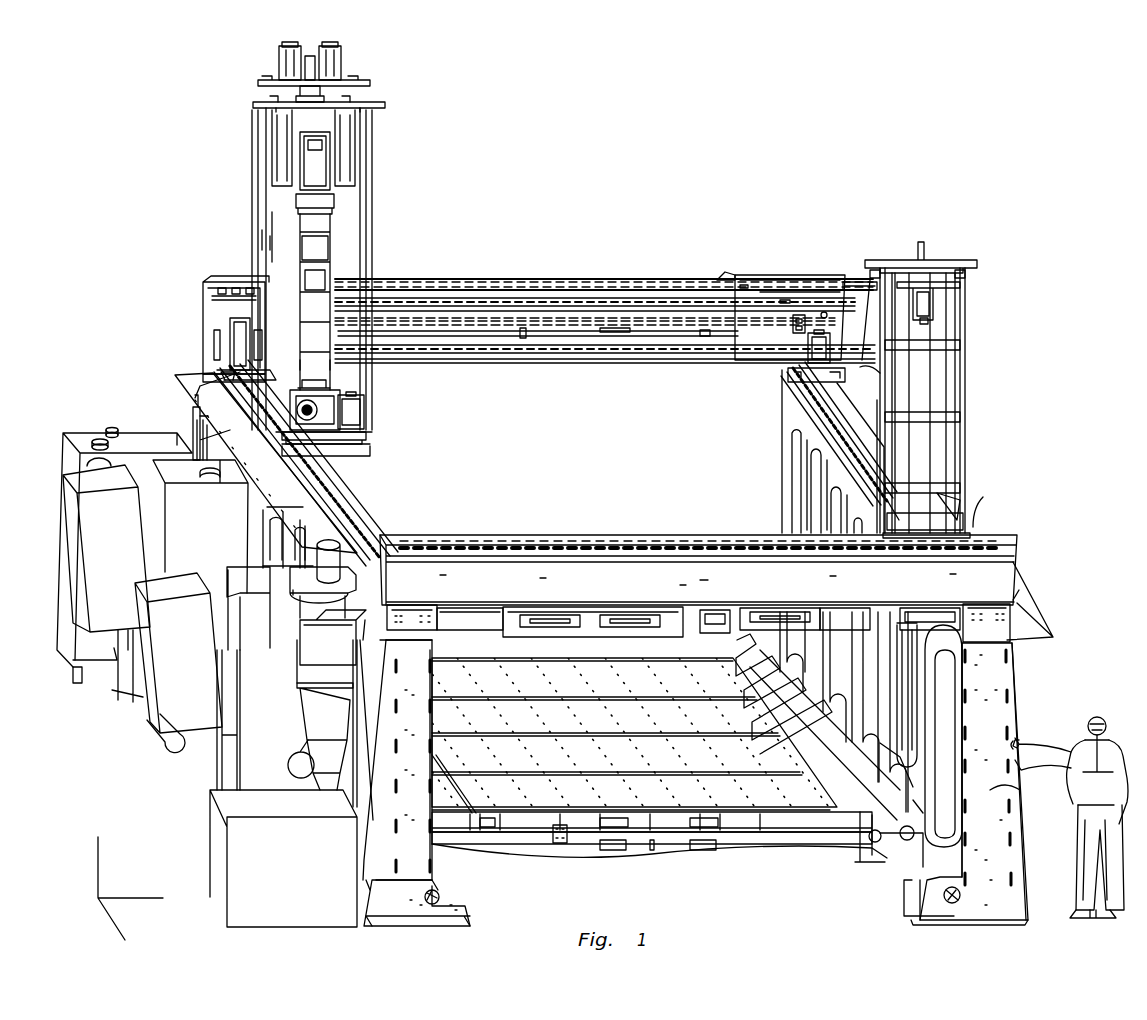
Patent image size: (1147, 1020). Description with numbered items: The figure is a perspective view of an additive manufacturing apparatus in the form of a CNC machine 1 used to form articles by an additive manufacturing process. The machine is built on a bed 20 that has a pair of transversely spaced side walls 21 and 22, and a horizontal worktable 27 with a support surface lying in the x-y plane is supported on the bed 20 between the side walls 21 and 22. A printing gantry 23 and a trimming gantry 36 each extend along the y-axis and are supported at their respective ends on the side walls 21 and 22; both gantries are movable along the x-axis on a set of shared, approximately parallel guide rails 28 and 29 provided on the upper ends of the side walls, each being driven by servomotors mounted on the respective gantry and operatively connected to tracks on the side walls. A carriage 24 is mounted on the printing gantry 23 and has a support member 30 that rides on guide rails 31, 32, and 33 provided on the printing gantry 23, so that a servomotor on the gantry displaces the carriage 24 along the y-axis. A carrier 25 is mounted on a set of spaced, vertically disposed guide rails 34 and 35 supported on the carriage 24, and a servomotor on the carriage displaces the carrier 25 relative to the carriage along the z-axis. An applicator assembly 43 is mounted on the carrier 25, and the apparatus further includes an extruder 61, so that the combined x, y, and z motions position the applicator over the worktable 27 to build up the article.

The CNC machine 1 is at (962, 162).
The bed 20 is at (572, 850).
The side wall 21 is at (413, 738).
The side wall 22 is at (990, 793).
The printing gantry 23 is at (766, 292).
The carriage 24 is at (256, 240).
The carrier 25 is at (362, 170).
The horizontal worktable 27 is at (597, 750).
The guide rail 28 is at (370, 500).
The guide rail 29 is at (799, 410).
The support member 30 is at (255, 262).
The guide rail 31 is at (630, 280).
The guide rail 32 is at (558, 300).
The guide rail 33 is at (592, 348).
The guide rail 34 is at (272, 219).
The guide rail 35 is at (335, 374).
The trimming gantry 36 is at (968, 528).
The applicator assembly 43 is at (330, 448).
The extruder 61 is at (332, 262).